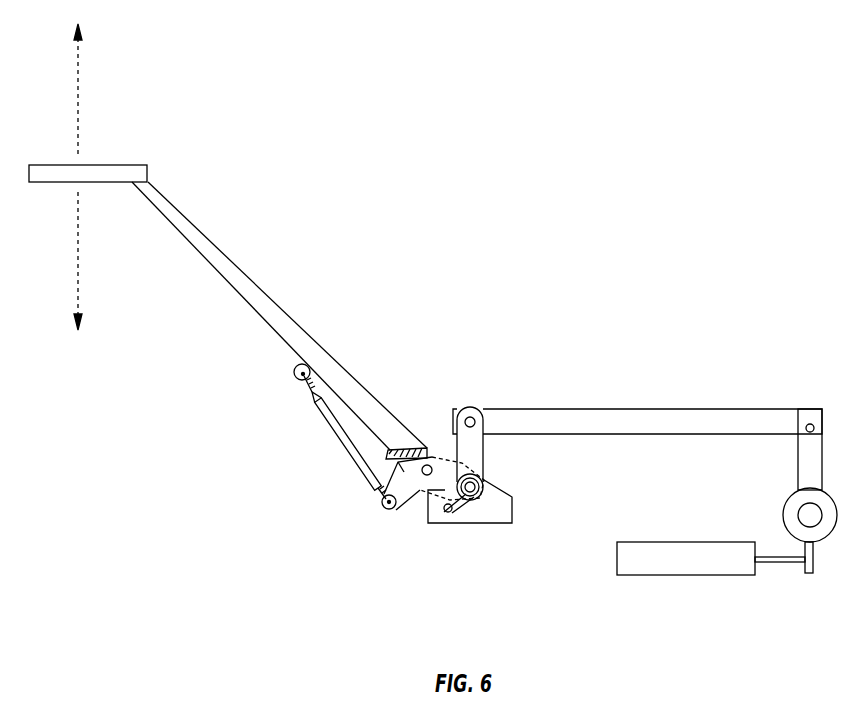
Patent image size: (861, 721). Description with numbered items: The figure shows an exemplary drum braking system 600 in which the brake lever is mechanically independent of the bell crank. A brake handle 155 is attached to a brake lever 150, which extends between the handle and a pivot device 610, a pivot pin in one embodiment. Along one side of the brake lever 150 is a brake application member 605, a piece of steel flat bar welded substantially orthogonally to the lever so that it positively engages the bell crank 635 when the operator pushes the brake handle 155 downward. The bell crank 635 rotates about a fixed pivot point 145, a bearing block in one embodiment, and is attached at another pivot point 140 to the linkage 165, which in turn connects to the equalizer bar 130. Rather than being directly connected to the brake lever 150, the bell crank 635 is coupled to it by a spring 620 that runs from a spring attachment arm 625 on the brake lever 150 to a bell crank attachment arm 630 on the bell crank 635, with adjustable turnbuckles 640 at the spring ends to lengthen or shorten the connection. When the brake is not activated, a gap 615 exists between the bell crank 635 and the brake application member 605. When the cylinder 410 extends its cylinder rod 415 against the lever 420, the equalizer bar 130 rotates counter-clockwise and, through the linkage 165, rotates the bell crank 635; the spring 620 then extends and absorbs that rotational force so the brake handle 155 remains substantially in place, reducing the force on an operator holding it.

The drum braking system 600 is at (716, 92).
The brake handle 155 is at (111, 165).
The brake lever 150 is at (248, 280).
The brake application member 605 is at (398, 447).
The spring attachment arm 625 is at (294, 378).
The adjustable turnbuckles 640 is at (309, 392).
The spring 620 is at (336, 437).
The bell crank attachment arm 630 is at (384, 508).
The bell crank 635 is at (448, 461).
The gap 615 is at (388, 465).
The pivot device 610 is at (426, 488).
The fixed pivot point 145 is at (478, 504).
The pivot point 140 is at (468, 407).
The linkage 165 is at (617, 408).
The equalizer bar 130 is at (783, 515).
The lever 420 is at (810, 575).
The cylinder rod 415 is at (767, 565).
The cylinder 410 is at (683, 577).